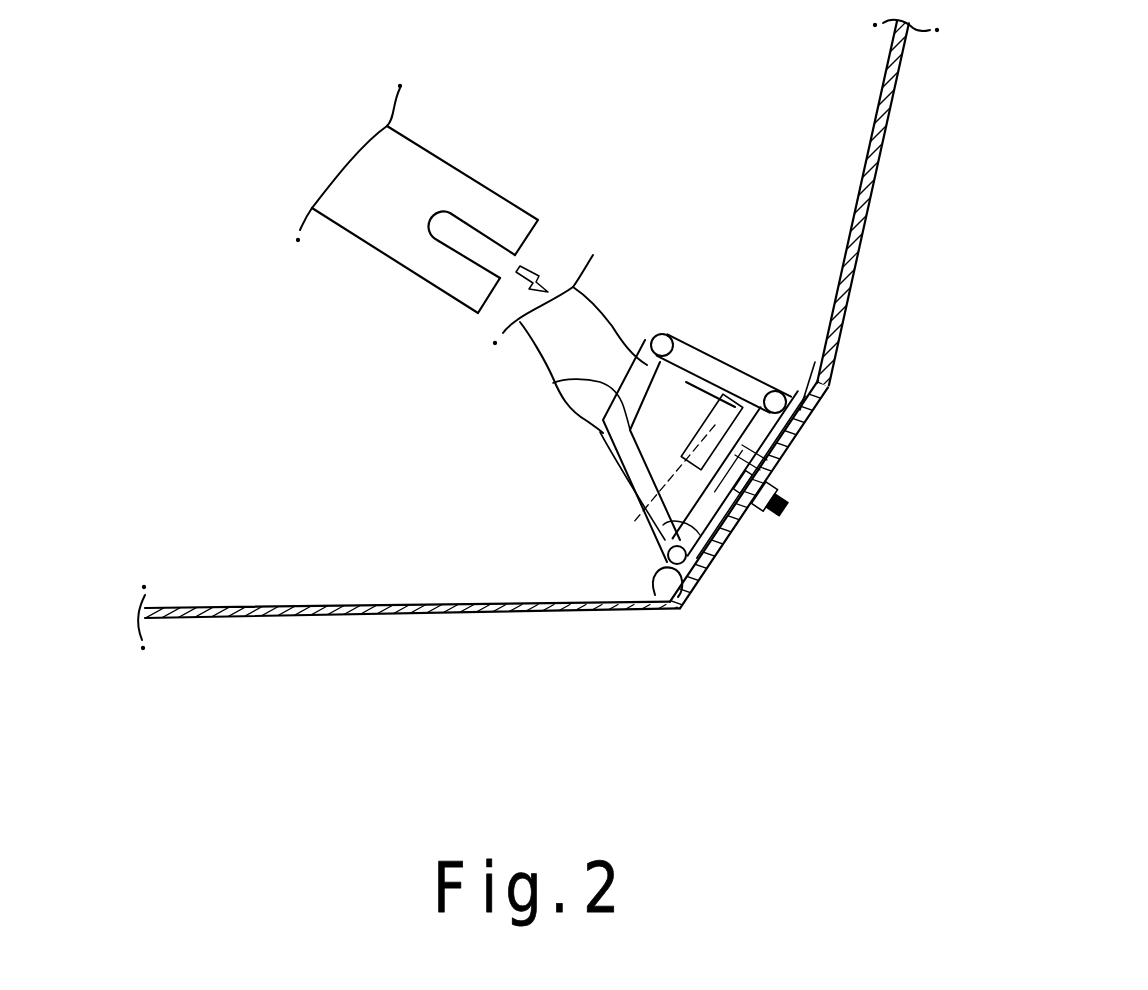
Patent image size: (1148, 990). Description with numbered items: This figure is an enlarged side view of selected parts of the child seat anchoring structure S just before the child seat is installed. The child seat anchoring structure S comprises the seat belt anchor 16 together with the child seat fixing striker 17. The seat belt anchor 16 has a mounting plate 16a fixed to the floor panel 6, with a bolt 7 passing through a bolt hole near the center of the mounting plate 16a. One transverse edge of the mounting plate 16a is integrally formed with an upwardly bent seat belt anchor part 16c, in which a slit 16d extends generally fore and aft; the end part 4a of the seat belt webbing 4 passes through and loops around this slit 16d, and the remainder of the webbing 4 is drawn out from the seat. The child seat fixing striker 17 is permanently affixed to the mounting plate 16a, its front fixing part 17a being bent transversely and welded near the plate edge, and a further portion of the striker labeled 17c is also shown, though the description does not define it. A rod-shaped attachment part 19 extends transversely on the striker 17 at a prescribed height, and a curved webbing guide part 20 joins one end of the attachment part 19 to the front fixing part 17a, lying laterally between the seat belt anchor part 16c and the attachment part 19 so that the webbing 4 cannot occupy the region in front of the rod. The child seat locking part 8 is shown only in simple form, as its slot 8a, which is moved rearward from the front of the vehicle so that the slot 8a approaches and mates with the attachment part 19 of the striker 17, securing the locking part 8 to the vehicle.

The seat belt webbing 4 is at (555, 398).
The end part of the seat belt webbing 4a is at (630, 502).
The floor panel 6 is at (568, 610).
The bolt 7 is at (780, 457).
The child seat locking part 8 is at (427, 157).
The slot 8a is at (468, 233).
The seat belt anchor 16 is at (779, 332).
The mounting plate 16a is at (792, 388).
The seat belt anchor part 16c is at (758, 392).
The slit 16d is at (710, 538).
The child seat fixing striker 17 is at (776, 433).
The front fixing part 17a is at (668, 615).
The bracket upper flange 17c is at (830, 373).
The rod-shaped attachment part 19 is at (660, 385).
The webbing guide part 20 is at (553, 383).
The child seat anchoring structure S is at (585, 545).